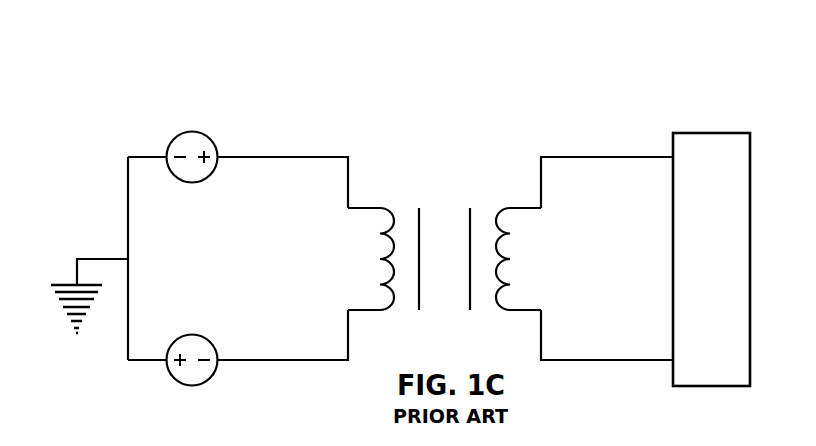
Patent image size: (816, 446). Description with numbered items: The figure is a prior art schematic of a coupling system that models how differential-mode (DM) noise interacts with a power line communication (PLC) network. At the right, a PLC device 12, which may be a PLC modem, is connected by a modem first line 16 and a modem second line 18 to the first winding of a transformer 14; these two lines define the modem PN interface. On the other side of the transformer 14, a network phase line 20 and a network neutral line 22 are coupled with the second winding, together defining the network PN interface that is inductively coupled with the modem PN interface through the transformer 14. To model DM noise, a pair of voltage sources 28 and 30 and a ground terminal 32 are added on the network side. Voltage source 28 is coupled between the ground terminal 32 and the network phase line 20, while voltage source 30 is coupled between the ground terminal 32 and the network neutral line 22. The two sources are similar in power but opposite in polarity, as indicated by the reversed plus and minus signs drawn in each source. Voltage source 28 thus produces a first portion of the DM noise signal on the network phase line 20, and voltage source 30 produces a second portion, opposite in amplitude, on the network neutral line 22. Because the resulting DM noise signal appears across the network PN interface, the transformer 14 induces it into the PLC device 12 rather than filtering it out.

The PLC device 12 is at (750, 258).
The transformer 14 is at (445, 184).
The modem first line 16 is at (568, 157).
The modem second line 18 is at (558, 360).
The network phase line 20 is at (320, 157).
The network neutral line 22 is at (330, 360).
The voltage source 28 is at (192, 183).
The voltage source 30 is at (193, 334).
The ground terminal 32 is at (55, 307).